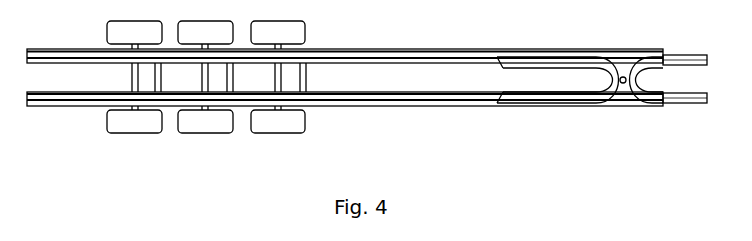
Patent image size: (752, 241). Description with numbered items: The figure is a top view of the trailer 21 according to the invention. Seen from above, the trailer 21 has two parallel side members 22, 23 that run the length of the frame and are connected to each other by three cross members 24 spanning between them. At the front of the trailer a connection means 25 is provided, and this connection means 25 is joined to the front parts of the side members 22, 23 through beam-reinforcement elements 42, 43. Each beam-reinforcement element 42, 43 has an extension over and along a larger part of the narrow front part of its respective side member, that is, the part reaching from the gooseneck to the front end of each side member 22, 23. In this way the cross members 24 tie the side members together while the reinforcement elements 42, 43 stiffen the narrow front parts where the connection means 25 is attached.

The trailer 21 is at (367, 96).
The side member 22 is at (363, 58).
The side member 23 is at (350, 99).
The cross member 24 is at (300, 80).
The connection means 25 is at (621, 70).
The beam-reinforcement element 42 is at (544, 59).
The beam-reinforcement element 43 is at (576, 100).